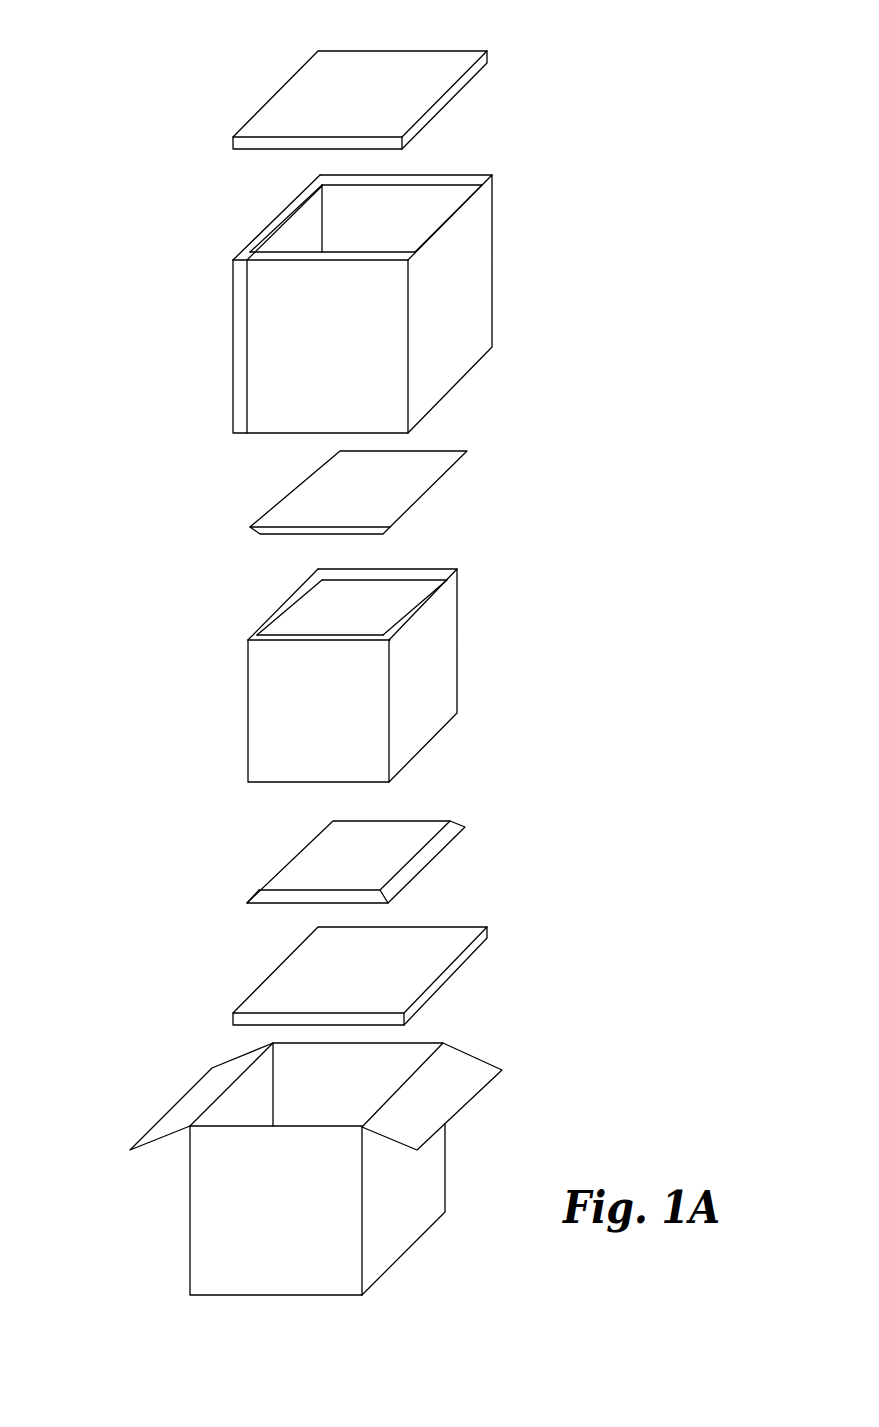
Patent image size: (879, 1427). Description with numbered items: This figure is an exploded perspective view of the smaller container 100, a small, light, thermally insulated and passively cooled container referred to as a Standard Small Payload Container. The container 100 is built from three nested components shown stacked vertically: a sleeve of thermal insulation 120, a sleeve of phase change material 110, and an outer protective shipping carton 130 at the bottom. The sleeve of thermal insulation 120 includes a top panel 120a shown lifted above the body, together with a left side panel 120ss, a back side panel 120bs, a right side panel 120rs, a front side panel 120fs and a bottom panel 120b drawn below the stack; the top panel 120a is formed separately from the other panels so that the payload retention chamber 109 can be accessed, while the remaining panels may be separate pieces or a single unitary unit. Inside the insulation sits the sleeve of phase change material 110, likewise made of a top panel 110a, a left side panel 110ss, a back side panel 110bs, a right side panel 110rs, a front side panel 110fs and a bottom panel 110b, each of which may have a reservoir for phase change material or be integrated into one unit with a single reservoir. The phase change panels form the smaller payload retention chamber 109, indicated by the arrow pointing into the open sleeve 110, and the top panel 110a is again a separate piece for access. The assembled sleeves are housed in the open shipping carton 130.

The smaller container 100 is at (129, 74).
The top panel 120a is at (310, 90).
The sleeve of thermal insulation 120 is at (399, 304).
The left side panel 120ss is at (287, 240).
The back side panel 120bs is at (428, 202).
The right side panel 120rs is at (477, 250).
The front side panel 120fs is at (367, 347).
The top panel 110a is at (305, 503).
The sleeve of phase change material 110 is at (375, 663).
The left side panel 110ss is at (277, 612).
The payload retention chamber 109 is at (361, 613).
The back side panel 110bs is at (395, 590).
The right side panel 110rs is at (442, 690).
The front side panel 110fs is at (357, 712).
The bottom panel 110b is at (332, 857).
The bottom panel 120b is at (310, 963).
The outer protective shipping carton 130 is at (290, 1205).